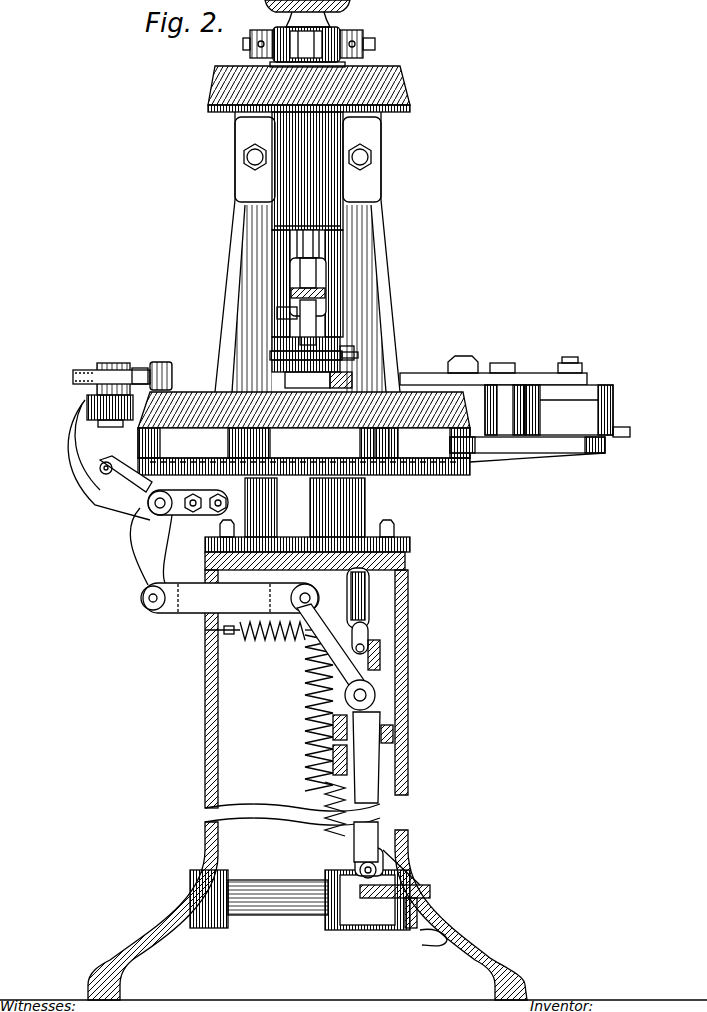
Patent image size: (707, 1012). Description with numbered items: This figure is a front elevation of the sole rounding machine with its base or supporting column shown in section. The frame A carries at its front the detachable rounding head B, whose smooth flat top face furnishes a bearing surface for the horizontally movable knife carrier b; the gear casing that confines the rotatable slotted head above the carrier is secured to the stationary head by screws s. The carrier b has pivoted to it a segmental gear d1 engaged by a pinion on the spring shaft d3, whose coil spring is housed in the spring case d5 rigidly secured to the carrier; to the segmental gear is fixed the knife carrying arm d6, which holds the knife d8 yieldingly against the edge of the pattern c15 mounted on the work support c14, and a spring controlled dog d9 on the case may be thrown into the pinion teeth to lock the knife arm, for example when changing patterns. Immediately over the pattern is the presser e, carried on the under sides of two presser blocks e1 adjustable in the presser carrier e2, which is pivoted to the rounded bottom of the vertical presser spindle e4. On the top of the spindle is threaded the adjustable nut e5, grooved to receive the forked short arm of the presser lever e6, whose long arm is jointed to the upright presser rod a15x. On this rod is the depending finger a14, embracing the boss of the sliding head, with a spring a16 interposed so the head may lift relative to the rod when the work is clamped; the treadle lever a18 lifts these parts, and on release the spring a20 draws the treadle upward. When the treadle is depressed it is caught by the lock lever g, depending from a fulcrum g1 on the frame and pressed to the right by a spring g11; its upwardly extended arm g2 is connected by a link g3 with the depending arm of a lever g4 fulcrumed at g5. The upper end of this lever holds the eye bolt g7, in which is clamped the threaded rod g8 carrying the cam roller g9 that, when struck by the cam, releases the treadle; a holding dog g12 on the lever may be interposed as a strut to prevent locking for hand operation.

The adjustable nut e5 is at (330, 36).
The presser lever e6 is at (358, 44).
The presser spindle e4 is at (320, 244).
The presser carrier e2 is at (318, 302).
The presser blocks e1 is at (316, 326).
The presser e is at (280, 340).
The pattern c15 is at (278, 354).
The work support c14 is at (276, 365).
The knife d8 is at (354, 350).
The knife carrying arm d6 is at (408, 376).
The segmental gear d1 is at (473, 392).
The spring shaft d3 is at (572, 364).
The spring case d5 is at (612, 386).
The spring controlled dog d9 is at (620, 437).
The screws s is at (388, 430).
The knife carrier b is at (482, 458).
The rounding head B is at (463, 478).
The frame A is at (205, 752).
The treadle lever a18 is at (420, 880).
The eye bolt g7 is at (110, 363).
The threaded rod g8 is at (141, 368).
The cam roller g9 is at (165, 375).
The holding dog g12 is at (100, 470).
The fulcrum g5 is at (150, 505).
The lever g4 is at (148, 535).
The link g3 is at (200, 606).
The spring g11 is at (275, 640).
The spring a20 is at (310, 762).
The upwardly extended arm g2 is at (330, 636).
The presser rod a15x is at (362, 590).
The depending finger a14 is at (368, 630).
The spring a16 is at (380, 665).
The fulcrum g1 is at (375, 695).
The lock lever g is at (380, 775).